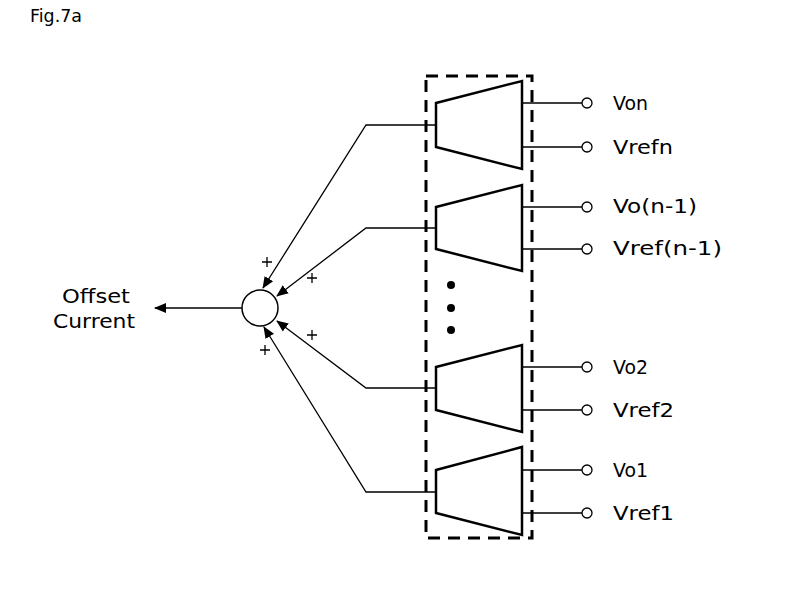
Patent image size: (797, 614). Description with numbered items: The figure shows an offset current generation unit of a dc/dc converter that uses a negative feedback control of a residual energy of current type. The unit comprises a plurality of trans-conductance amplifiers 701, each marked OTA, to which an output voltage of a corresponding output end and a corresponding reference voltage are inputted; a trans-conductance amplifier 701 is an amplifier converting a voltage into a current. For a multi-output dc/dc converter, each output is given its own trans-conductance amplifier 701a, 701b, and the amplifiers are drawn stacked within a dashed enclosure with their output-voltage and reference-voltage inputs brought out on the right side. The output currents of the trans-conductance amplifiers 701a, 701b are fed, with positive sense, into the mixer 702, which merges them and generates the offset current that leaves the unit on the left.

The trans-conductance amplifier 701 is at (474, 333).
The trans-conductance amplifier 701a is at (462, 463).
The trans-conductance amplifier 701b is at (462, 360).
The mixer 702 is at (243, 322).